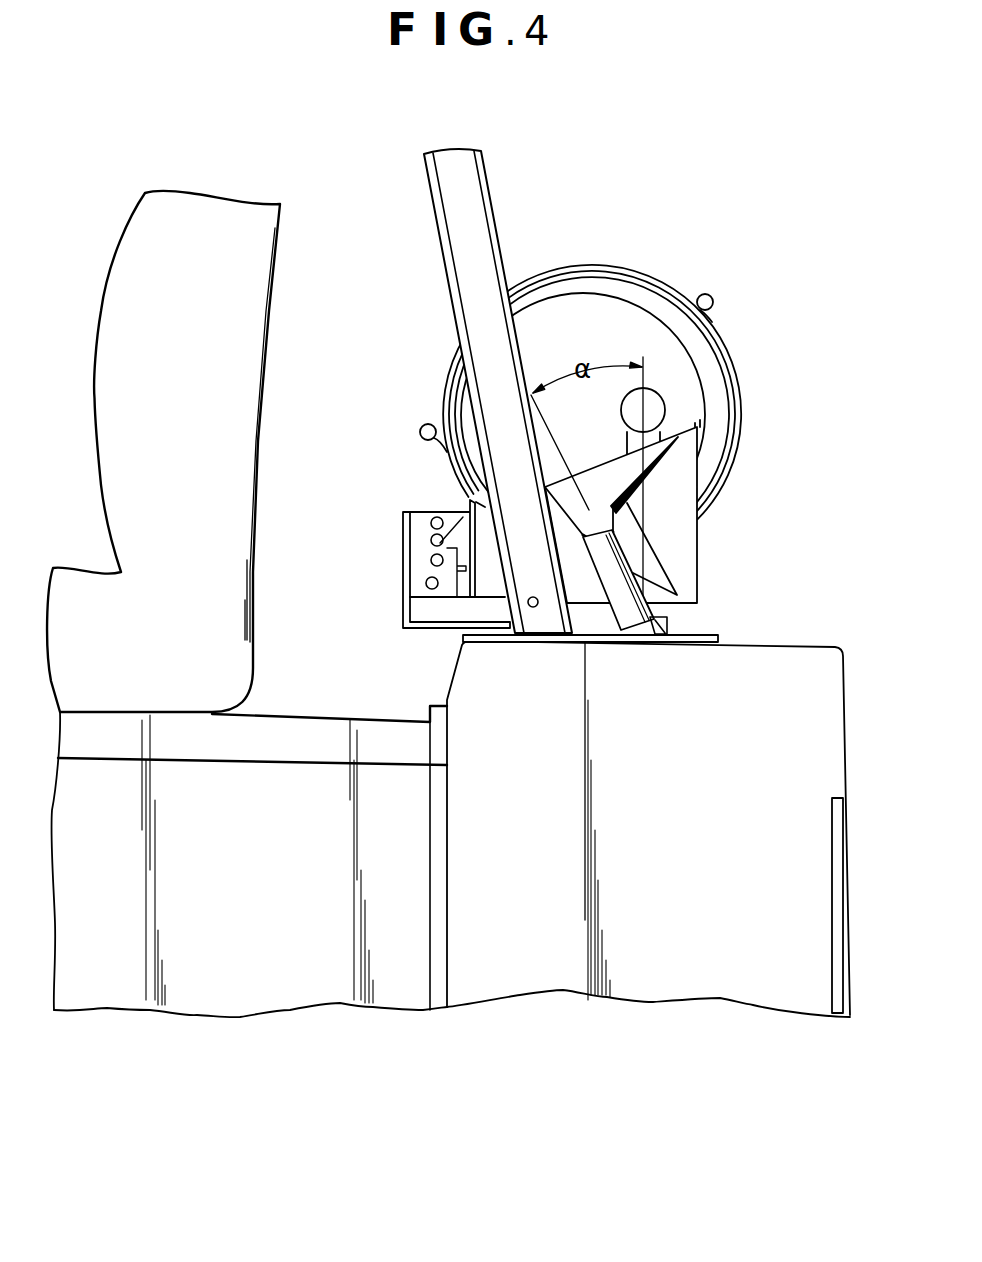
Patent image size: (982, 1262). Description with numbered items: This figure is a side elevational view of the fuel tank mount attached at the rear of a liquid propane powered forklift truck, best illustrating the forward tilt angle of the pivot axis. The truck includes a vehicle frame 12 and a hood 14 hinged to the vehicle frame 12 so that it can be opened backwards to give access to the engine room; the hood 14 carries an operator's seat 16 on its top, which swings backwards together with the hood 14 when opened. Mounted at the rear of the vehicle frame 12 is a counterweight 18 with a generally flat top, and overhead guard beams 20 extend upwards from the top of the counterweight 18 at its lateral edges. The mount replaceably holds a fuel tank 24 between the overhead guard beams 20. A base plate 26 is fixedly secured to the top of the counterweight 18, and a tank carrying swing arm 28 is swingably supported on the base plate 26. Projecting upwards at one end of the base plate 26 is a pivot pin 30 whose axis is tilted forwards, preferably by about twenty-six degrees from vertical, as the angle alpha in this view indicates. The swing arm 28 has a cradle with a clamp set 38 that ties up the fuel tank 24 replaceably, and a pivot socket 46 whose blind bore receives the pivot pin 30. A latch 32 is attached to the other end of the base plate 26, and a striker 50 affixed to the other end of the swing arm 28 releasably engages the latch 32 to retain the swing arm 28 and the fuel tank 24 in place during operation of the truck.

The vehicle frame 12 is at (243, 994).
The hood 14 is at (307, 728).
The operator's seat 16 is at (256, 306).
The counterweight 18 is at (833, 673).
The overhead guard beams 20 is at (477, 192).
The fuel tank 24 is at (617, 273).
The base plate 26 is at (717, 640).
The tank carrying swing arm 28 is at (700, 556).
The pivot pin 30 is at (660, 614).
The latch 32 is at (422, 515).
The clamp set 38 is at (713, 330).
The pivot socket 46 is at (617, 540).
The striker 50 is at (431, 540).